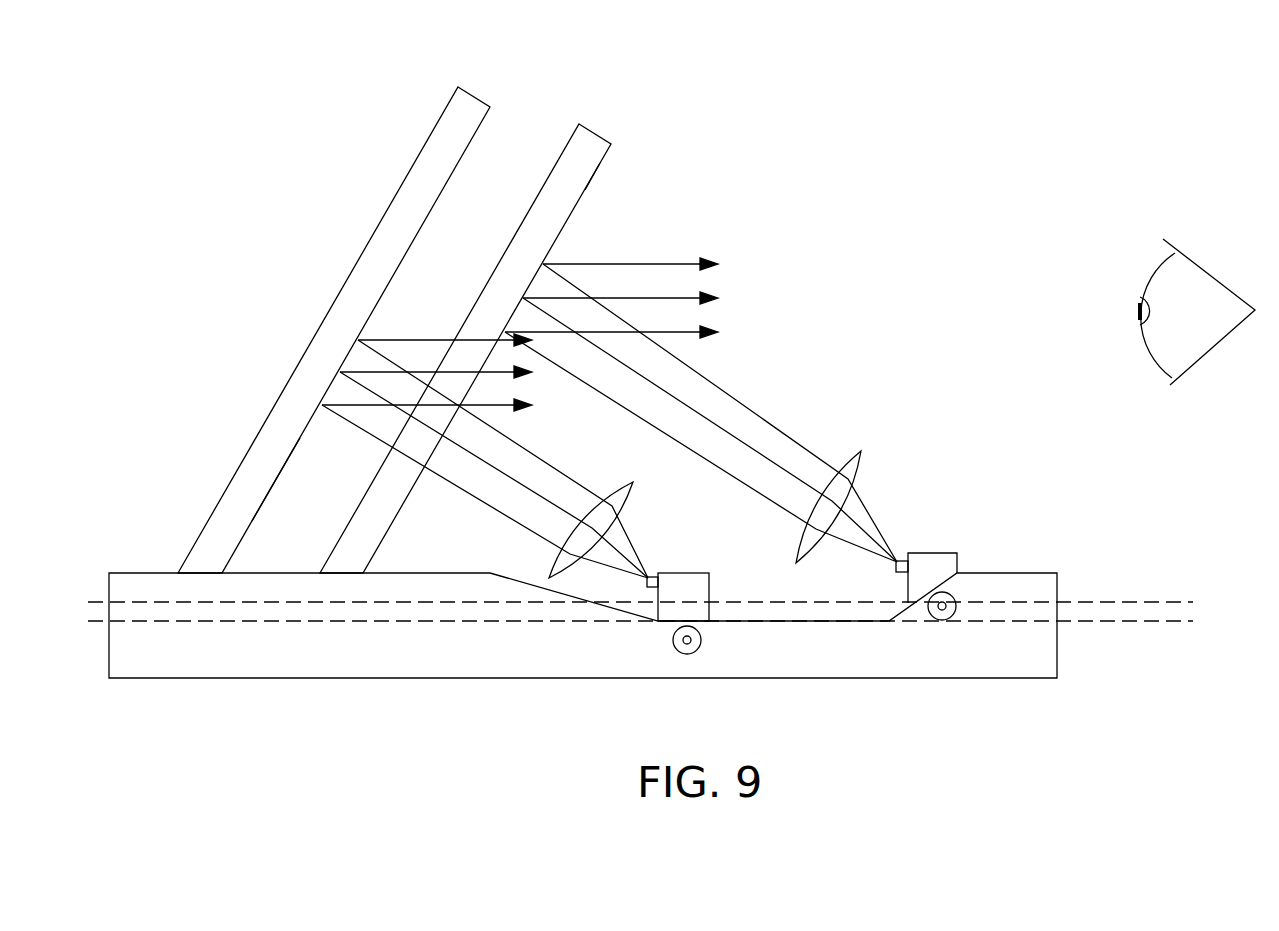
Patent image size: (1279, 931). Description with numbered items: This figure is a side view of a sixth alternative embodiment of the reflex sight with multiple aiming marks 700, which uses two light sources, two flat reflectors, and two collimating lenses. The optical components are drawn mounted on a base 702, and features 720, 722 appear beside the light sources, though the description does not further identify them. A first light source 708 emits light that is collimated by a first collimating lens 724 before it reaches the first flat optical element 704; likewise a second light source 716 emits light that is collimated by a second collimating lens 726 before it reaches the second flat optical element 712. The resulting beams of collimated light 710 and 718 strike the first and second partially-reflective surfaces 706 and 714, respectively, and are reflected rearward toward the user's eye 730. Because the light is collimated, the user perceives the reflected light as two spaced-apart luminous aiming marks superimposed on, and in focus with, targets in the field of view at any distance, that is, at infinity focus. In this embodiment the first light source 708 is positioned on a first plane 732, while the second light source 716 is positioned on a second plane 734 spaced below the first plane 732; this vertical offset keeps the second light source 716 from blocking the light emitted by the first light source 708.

The reflex sight with multiple aiming marks 700 is at (900, 156).
The base / substrate 702 is at (600, 678).
The first (flat) optical element 704 is at (480, 93).
The first partially-reflective surface 706 is at (272, 487).
The first light source 708 is at (689, 573).
The beam of collimated light 710 is at (420, 338).
The second (flat) optical element 712 is at (602, 130).
The second partially-reflective surface 714 is at (593, 178).
The second light source 716 is at (939, 553).
The beam of collimated light 718 is at (674, 263).
The first pivot axis 720 is at (702, 641).
The second pivot axis 722 is at (952, 596).
The first collimating lens 724 is at (617, 485).
The second collimating lens 726 is at (848, 458).
The user's eye 730 is at (1195, 262).
The first plane 732 is at (1165, 601).
The second plane 734 is at (1165, 623).